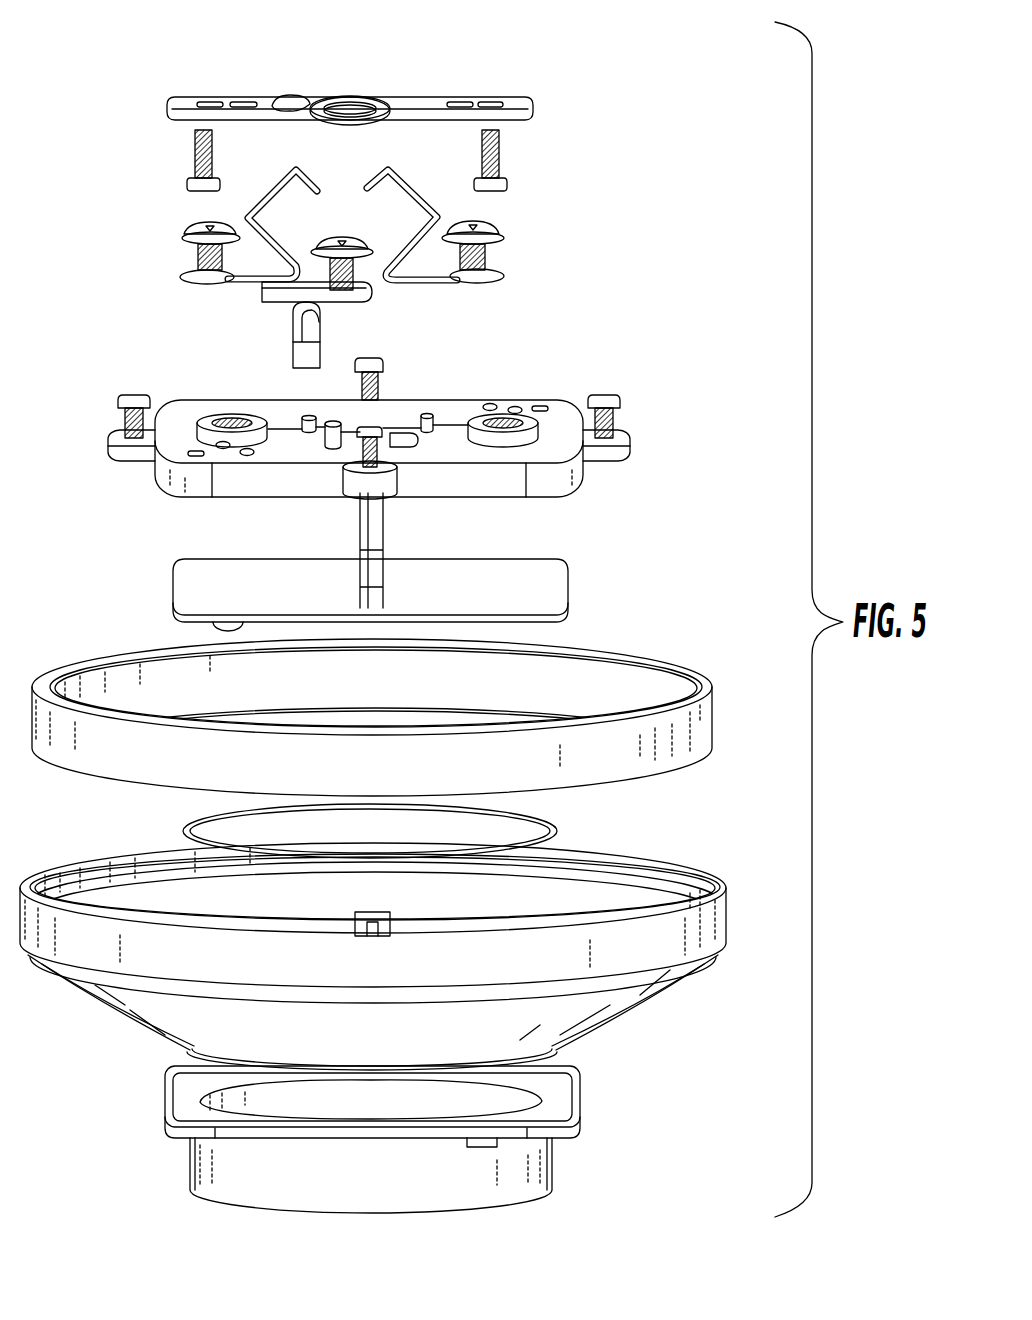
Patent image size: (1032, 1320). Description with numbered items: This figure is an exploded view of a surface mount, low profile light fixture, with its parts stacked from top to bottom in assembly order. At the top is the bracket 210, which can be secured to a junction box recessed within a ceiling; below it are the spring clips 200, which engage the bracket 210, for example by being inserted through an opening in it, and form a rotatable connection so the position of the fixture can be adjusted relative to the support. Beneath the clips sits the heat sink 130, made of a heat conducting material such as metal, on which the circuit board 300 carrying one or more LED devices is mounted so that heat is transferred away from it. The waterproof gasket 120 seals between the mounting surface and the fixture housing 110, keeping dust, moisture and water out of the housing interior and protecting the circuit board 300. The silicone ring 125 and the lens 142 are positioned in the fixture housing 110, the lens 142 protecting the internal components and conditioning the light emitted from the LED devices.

The bracket 210 is at (503, 100).
The spring clips 200 is at (423, 192).
The heat sink 130 is at (558, 412).
The circuit board 300 is at (552, 577).
The waterproof gasket 120 is at (676, 724).
The silicone ring 125 is at (553, 833).
The fixture housing 110 is at (703, 923).
The lens 142 is at (532, 1165).